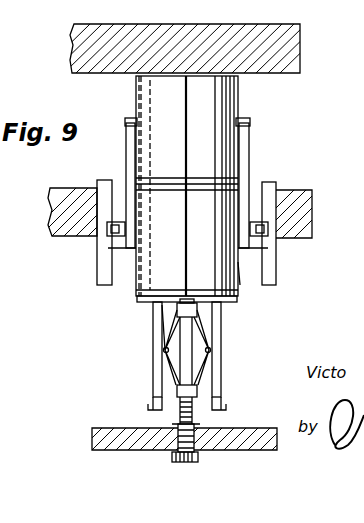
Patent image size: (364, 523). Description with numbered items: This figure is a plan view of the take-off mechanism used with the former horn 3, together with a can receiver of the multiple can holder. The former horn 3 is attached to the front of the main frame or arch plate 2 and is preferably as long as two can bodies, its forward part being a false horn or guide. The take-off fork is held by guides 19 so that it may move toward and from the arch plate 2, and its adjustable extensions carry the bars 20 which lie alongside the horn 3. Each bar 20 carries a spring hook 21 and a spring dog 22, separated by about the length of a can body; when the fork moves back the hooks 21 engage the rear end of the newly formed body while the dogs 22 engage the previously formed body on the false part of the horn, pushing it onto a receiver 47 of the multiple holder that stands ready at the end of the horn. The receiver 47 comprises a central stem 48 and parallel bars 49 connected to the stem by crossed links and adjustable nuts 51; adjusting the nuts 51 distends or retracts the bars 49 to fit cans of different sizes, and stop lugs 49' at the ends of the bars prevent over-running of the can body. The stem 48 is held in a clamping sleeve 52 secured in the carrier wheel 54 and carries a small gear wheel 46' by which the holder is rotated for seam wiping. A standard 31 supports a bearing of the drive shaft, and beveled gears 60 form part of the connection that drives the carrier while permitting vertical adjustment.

The main frame or arch plate 2 is at (252, 28).
The former horn 3 is at (138, 76).
The guides 19 is at (104, 243).
The bars 20 is at (126, 157).
The spring hook 21 is at (243, 120).
The spring dog 22 is at (239, 292).
The standard 31 is at (185, 232).
The small gear wheel 46' is at (185, 466).
The receiver 47 is at (210, 352).
The central stem 48 is at (183, 356).
The parallel bars 49 is at (172, 349).
The stop lugs 49' is at (178, 393).
The adjustable nuts 51 is at (199, 306).
The clamping sleeves 52 is at (170, 450).
The carrier wheel 54 is at (252, 440).
The beveled gears 60 is at (165, 345).